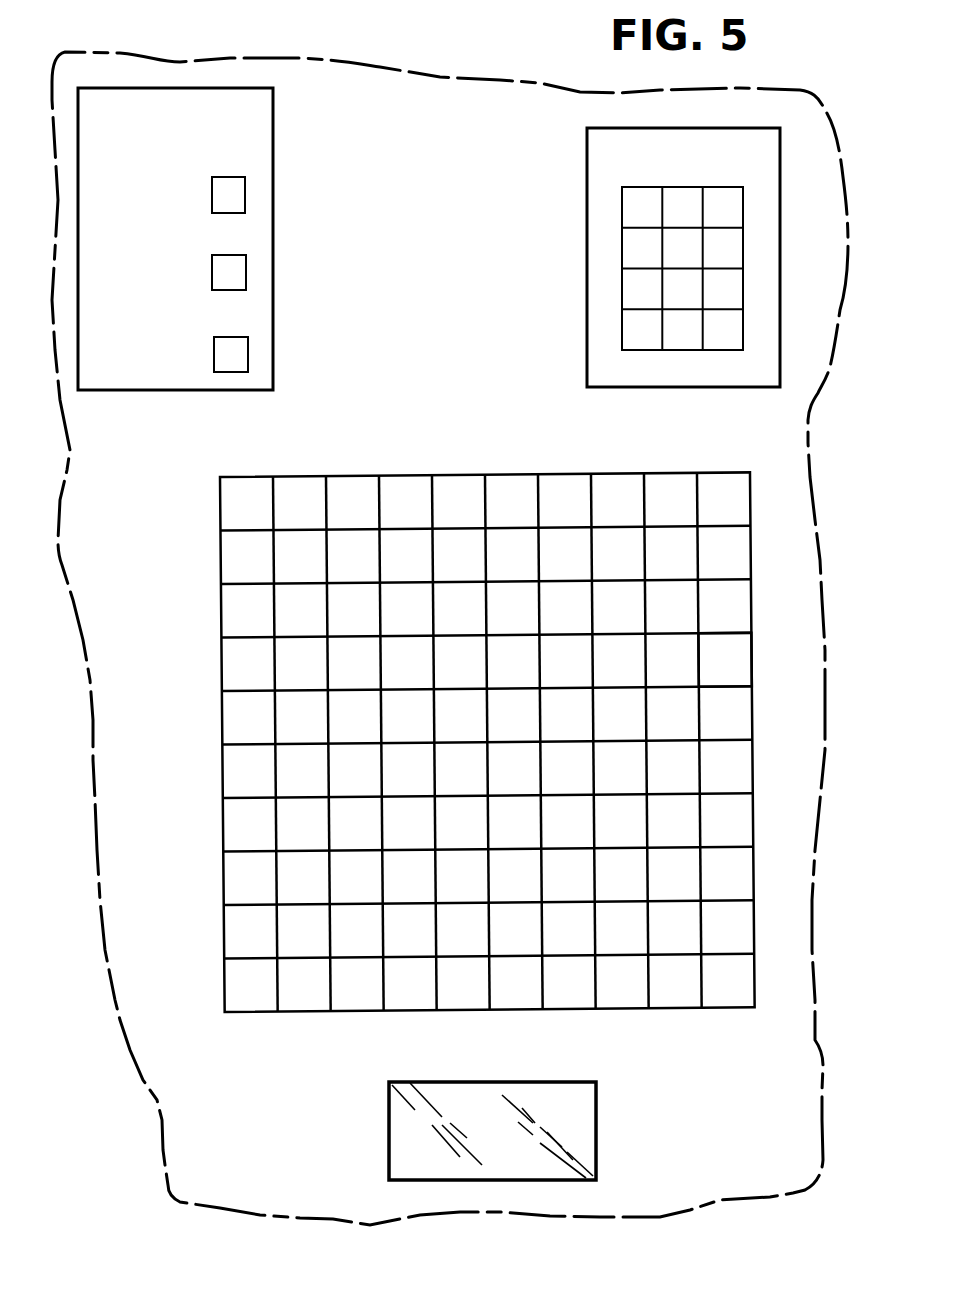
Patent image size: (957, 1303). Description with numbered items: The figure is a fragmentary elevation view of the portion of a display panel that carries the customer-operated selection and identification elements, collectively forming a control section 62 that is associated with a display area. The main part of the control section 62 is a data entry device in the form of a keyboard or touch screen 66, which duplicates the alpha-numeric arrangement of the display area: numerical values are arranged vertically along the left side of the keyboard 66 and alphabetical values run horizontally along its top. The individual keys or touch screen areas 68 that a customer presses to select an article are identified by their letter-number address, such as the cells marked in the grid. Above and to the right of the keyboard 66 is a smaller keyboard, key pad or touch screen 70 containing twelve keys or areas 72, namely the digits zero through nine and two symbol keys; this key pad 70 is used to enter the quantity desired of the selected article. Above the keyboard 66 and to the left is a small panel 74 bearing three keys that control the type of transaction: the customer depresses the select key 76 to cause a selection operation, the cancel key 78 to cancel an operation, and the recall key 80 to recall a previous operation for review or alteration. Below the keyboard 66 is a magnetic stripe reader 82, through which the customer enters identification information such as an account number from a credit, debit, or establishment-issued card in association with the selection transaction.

The control section 62 is at (815, 442).
The keyboard or touch screen 66 is at (752, 561).
The keys or touch screen areas 68 is at (735, 669).
The key pad 70 is at (783, 150).
The keys or areas 72 is at (740, 284).
The panel 74 is at (273, 130).
The select key 76 is at (240, 197).
The cancel key 78 is at (240, 271).
The recall key 80 is at (240, 353).
The magnetic stripe reader 82 is at (596, 1125).